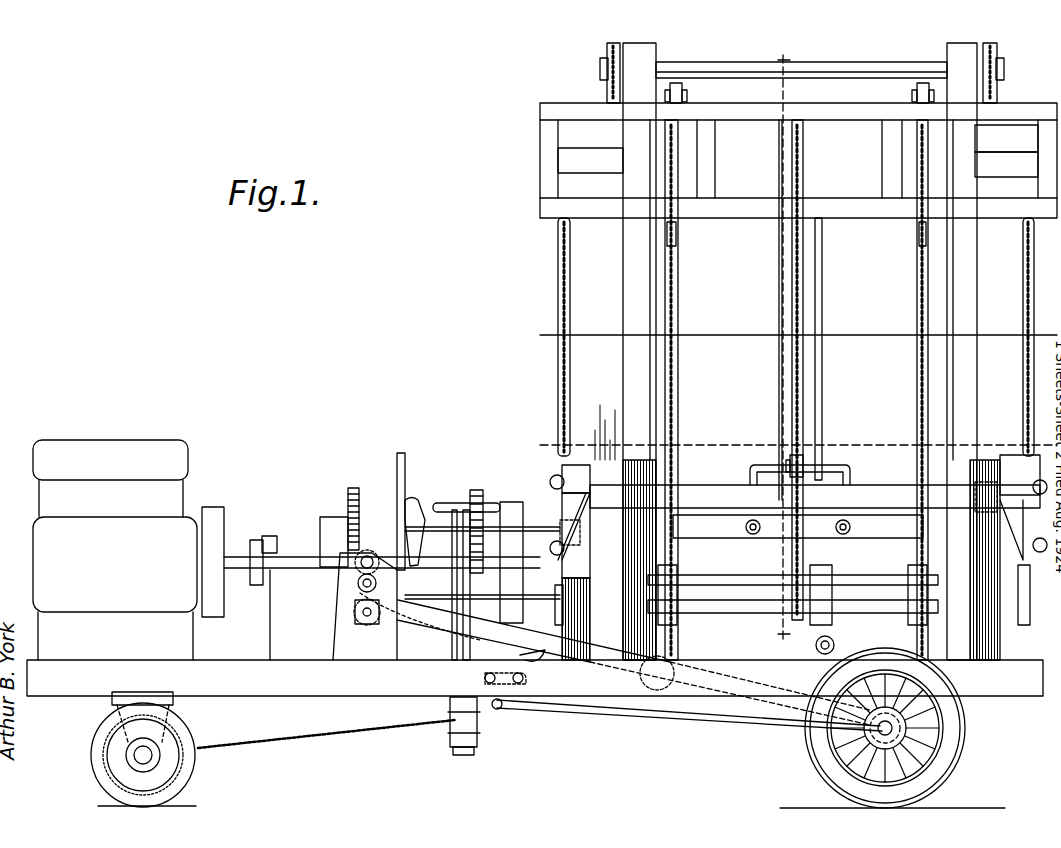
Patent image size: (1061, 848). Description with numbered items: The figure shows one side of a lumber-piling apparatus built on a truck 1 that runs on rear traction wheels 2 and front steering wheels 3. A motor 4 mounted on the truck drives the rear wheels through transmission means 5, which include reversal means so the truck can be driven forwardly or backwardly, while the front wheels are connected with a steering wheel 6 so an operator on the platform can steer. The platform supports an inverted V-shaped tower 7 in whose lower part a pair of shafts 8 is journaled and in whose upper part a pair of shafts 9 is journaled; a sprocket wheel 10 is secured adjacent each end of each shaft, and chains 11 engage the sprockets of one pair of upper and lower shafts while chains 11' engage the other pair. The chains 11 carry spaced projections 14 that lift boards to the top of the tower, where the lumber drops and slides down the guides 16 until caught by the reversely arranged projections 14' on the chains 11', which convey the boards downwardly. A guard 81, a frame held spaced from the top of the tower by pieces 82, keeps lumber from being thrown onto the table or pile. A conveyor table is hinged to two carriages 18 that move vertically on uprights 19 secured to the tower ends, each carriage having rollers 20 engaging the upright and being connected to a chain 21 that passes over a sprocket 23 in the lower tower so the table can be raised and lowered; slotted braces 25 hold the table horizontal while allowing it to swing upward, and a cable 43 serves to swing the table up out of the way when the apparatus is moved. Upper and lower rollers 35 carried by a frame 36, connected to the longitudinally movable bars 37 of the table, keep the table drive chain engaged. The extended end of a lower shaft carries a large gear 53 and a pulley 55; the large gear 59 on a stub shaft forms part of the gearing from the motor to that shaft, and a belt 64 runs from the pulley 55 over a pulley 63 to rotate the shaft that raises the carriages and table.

The truck 1 is at (365, 680).
The rear traction wheels 2 is at (960, 728).
The front steering wheels 3 is at (185, 770).
The motor 4 is at (115, 550).
The transmission means 5 is at (287, 545).
The steering wheel 6 is at (448, 503).
The tower 7 is at (798, 301).
The lower shafts 8 is at (712, 590).
The upper shafts 9 is at (734, 72).
The sprocket wheel 10 is at (600, 64).
The chains 11 is at (799, 73).
The chains 11' is at (796, 390).
The projections 14 is at (1006, 138).
The projections 14' is at (796, 261).
The guides 16 is at (648, 57).
The carriages 18 is at (580, 560).
The uprights 19 is at (600, 430).
The rollers 20 is at (555, 482).
The chain 21 is at (558, 395).
The sprocket 23 is at (557, 598).
The slotted braces 25 is at (578, 510).
The rollers 35 is at (803, 462).
The frame 36 is at (852, 478).
The longitudinally movable bars 37 is at (779, 417).
The cable 43 is at (822, 395).
The large gear 53 is at (483, 495).
The pulley 55 is at (548, 546).
The large gear 59 is at (355, 488).
The pulley 63 is at (639, 665).
The belt 64 is at (505, 568).
The guard 81 is at (735, 210).
The pieces 82 is at (570, 160).